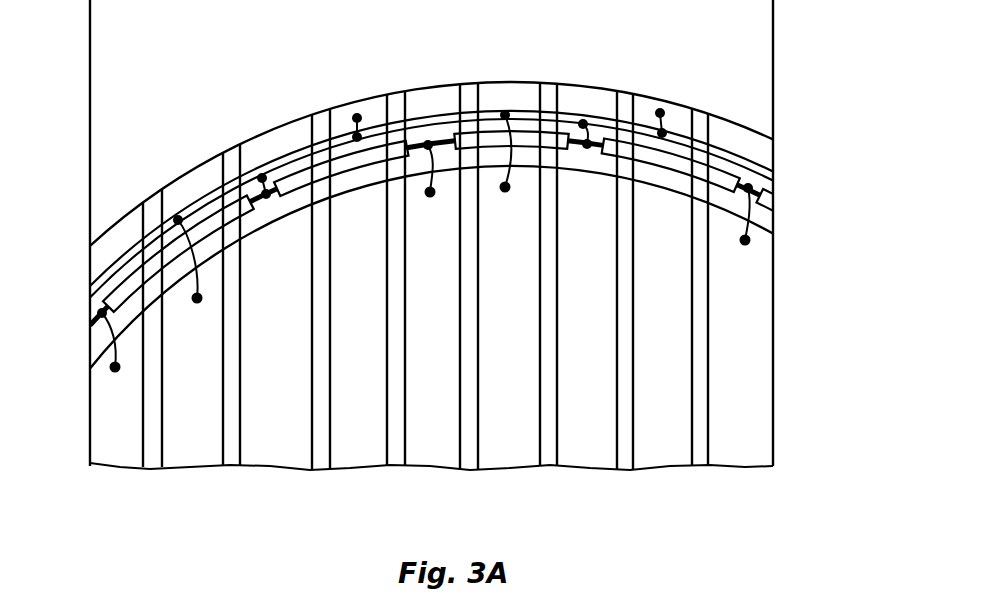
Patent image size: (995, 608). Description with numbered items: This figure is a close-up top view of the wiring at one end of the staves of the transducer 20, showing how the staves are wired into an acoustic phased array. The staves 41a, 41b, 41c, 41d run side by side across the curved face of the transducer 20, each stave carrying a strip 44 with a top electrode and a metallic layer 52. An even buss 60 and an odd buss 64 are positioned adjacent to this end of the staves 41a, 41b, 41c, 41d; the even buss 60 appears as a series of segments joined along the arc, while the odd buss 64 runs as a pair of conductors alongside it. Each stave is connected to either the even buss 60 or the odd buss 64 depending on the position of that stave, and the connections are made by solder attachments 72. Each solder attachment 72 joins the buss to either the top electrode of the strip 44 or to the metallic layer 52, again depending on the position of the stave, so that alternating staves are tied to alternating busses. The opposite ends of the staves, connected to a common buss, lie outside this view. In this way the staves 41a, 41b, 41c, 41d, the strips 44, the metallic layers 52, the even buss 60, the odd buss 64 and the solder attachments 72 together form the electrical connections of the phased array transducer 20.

The transducer 20 is at (796, 354).
The metallic layer 52 is at (106, 232).
The odd buss 64 is at (772, 168).
The even buss 60 is at (768, 199).
The solder connection 72 is at (357, 113).
The strip 44 is at (130, 433).
The stave 41a is at (113, 450).
The stave 41b is at (203, 450).
The stave 41c is at (292, 448).
The stave 41d is at (368, 452).